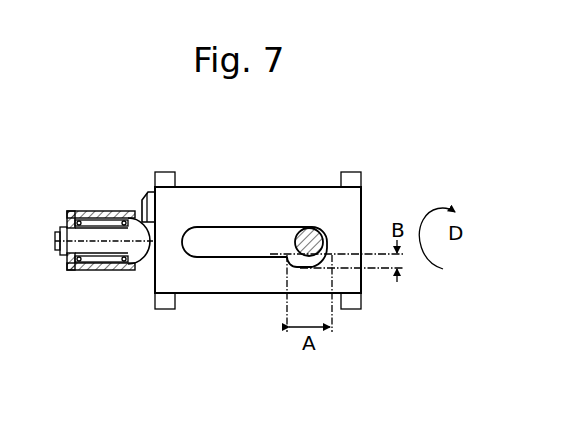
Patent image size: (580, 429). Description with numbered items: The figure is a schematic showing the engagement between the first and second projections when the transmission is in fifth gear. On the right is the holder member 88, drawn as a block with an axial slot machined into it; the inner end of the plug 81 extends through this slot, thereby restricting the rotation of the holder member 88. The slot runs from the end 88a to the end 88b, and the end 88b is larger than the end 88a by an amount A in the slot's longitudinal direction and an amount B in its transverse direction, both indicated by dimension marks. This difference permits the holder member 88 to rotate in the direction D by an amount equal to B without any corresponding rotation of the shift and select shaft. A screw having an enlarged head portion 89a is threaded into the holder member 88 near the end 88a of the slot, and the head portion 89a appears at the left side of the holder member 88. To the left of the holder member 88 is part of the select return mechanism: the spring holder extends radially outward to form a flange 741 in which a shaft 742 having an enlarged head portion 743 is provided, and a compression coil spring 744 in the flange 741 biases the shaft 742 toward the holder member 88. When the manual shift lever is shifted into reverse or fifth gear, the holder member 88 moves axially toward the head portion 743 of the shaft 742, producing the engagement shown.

The holder member 88 is at (243, 186).
The end of the axial slot 88a is at (213, 258).
The end of the axial slot 88b is at (303, 268).
The plug 81 is at (309, 227).
The enlarged head portion 89a is at (144, 200).
The flange 741 is at (70, 270).
The shaft 742 is at (100, 238).
The enlarged head portion 743 is at (140, 254).
The compression coil spring 744 is at (97, 263).